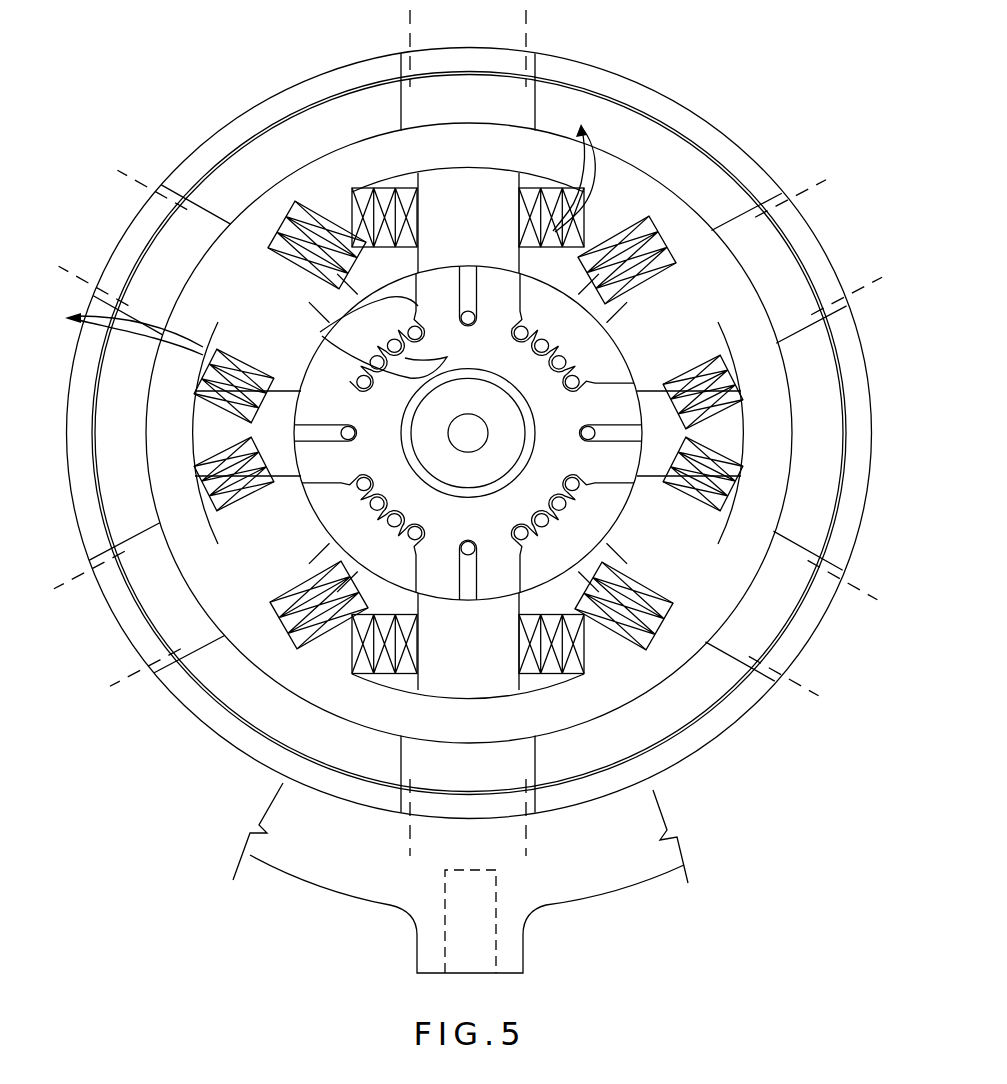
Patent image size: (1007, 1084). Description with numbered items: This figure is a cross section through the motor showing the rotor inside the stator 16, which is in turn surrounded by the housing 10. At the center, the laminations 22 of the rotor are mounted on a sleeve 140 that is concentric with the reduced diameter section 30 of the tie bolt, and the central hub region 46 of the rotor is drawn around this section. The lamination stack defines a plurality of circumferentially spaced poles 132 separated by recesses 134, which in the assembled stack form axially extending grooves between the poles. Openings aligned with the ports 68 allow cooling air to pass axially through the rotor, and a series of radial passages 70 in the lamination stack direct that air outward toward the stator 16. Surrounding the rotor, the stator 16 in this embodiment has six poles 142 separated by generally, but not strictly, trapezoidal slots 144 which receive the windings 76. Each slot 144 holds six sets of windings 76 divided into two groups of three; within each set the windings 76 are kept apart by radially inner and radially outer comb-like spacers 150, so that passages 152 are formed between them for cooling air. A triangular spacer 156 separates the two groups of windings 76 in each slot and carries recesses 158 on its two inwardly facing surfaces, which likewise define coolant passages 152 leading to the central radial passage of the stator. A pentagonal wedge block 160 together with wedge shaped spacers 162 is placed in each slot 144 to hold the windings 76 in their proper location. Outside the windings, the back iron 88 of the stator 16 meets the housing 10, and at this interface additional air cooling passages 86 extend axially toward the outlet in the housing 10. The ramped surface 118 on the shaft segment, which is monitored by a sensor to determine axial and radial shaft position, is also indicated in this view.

The housing 10 is at (597, 68).
The stator 16 is at (665, 187).
The laminations 22 is at (619, 366).
The reduced diameter section 30 is at (482, 447).
The bearing 46 is at (440, 409).
The ports 68 is at (382, 447).
The radial passages 70 is at (330, 322).
The windings 76 is at (314, 228).
The air cooling passages 86 is at (372, 74).
The back iron 88 is at (340, 105).
The ramped surface 118 is at (312, 563).
The poles 132 is at (292, 485).
The recesses 134 is at (600, 548).
The sleeve 140 is at (507, 397).
The poles 142 is at (467, 295).
The slots 144 is at (645, 278).
The comb-like spacers 150 is at (667, 247).
The passages 152 is at (578, 236).
The triangular spacer 156 is at (640, 208).
The recesses 158 is at (330, 210).
The pentagonal wedge block 160 is at (307, 267).
The wedge shaped spacers 162 is at (432, 152).